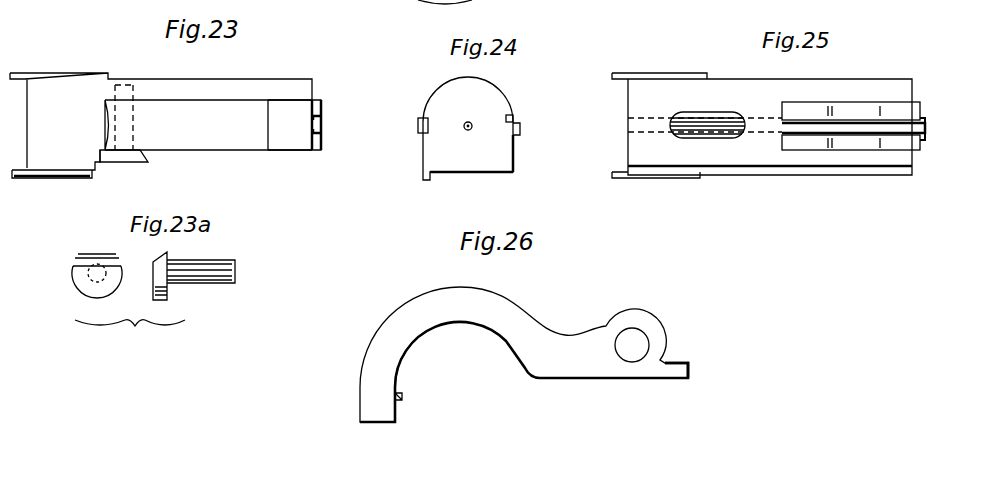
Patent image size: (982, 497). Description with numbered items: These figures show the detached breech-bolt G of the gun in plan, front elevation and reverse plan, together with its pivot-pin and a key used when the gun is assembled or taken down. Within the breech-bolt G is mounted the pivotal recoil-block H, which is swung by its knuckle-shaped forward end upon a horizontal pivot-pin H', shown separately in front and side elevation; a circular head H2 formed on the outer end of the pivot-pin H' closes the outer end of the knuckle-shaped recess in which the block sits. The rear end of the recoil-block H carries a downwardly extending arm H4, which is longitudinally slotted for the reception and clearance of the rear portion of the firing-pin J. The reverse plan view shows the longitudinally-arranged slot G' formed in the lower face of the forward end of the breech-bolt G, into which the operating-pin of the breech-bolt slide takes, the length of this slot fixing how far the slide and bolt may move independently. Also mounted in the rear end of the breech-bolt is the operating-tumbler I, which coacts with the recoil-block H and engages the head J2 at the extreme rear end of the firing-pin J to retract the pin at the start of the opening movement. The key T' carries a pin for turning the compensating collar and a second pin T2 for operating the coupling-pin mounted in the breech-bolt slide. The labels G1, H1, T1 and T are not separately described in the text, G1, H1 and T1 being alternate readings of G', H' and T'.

In FIG. 23, the breech-bolt G is at (161, 125).
In FIG. 24, the breech-bolt G is at (469, 128).
In FIG. 25, the breech-bolt G is at (762, 113).
In FIG. 25, the longitudinally-arranged slot G' is at (707, 110).
In FIG. 25, the slot in casing G1 is at (697, 120).
In FIG. 23, the recoil-block H is at (208, 125).
In FIG. 23, the pivot-pin H' is at (140, 100).
In FIG. 23A, the pivot-pin H' is at (194, 270).
In FIG. 23, the pin / bolt H1 is at (134, 90).
In FIG. 23A, the pin / bolt H1 is at (190, 270).
In FIG. 23, the circular head H2 is at (130, 163).
In FIG. 23A, the circular head H2 is at (72, 278).
In FIG. 25, the arm H4 is at (813, 146).
In FIG. 23, the operating-tumbler I is at (302, 117).
In FIG. 25, the operating-tumbler I is at (873, 146).
In FIG. 25, the firing-pin J is at (898, 115).
In FIG. 23, the head J2 is at (322, 125).
In FIG. 25, the head J2 is at (927, 125).
In FIG. 26, the notch of hook T is at (408, 383).
In FIG. 26, the key T' is at (524, 354).
In FIG. 26, the hook lever T1 is at (524, 354).
In FIG. 26, the pin T2 is at (670, 367).